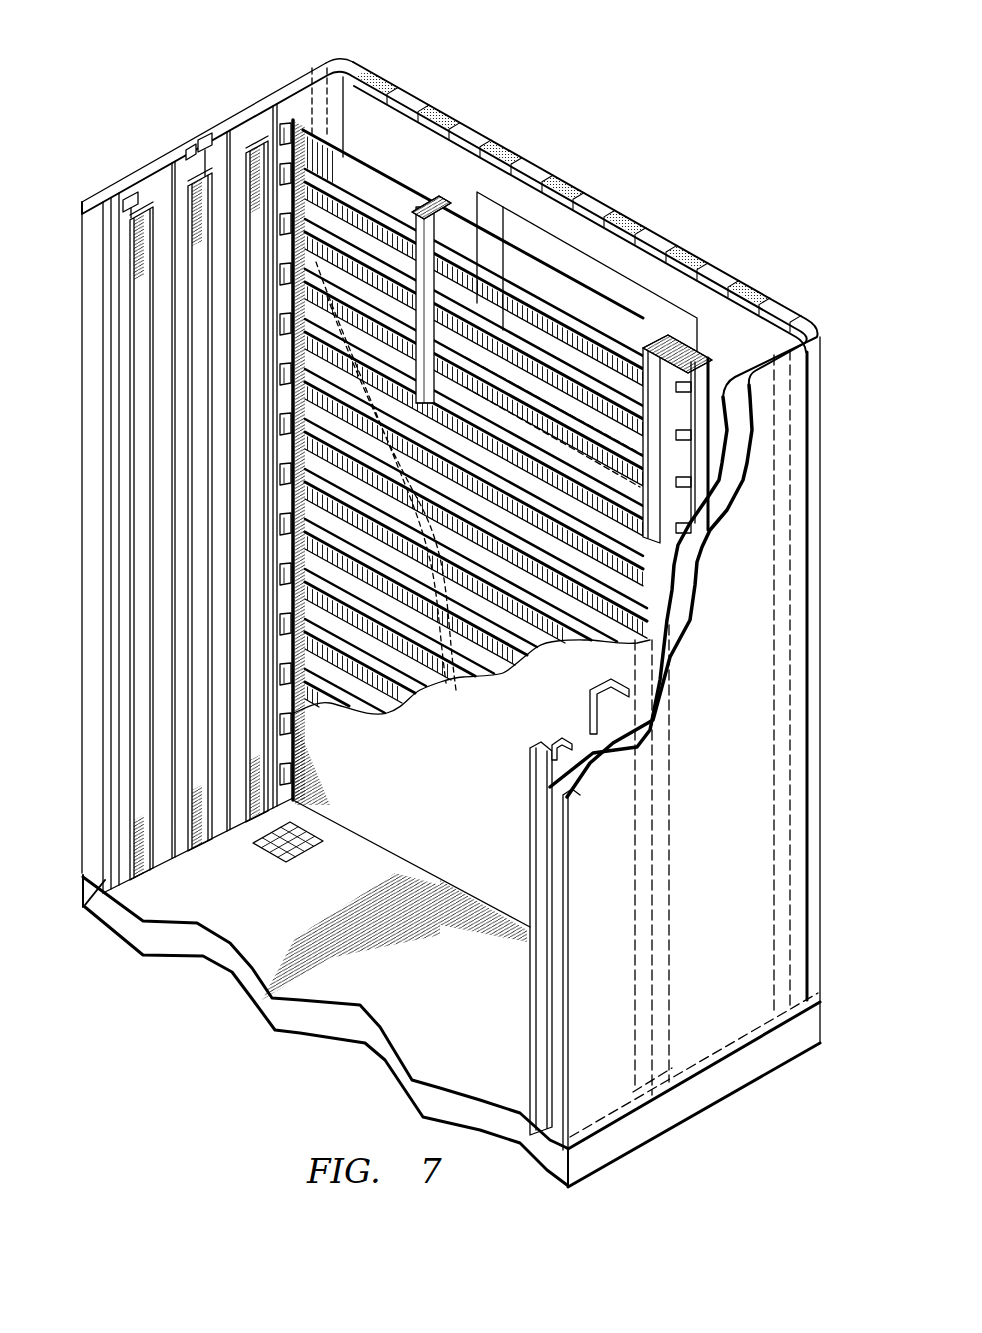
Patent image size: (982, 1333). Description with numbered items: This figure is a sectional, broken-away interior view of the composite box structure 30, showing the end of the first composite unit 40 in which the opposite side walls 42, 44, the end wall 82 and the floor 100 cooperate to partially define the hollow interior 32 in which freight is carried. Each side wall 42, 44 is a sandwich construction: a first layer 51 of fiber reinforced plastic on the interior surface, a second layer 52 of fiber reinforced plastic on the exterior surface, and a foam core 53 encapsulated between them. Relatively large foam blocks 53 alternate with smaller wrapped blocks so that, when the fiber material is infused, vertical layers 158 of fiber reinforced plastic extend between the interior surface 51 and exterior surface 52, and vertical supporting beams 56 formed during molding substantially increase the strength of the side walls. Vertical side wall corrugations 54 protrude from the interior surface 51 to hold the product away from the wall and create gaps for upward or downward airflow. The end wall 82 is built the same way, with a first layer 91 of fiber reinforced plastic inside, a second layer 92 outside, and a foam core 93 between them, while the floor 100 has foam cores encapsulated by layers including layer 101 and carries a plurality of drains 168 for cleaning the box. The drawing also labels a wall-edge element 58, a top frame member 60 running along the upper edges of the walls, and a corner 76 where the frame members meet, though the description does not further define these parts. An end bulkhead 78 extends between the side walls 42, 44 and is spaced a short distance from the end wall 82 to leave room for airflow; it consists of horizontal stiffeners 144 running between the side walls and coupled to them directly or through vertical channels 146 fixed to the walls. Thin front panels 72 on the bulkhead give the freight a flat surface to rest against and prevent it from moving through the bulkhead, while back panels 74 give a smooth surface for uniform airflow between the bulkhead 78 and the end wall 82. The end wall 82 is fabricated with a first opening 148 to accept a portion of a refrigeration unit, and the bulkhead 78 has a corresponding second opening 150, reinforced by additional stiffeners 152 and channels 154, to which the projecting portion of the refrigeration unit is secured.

The composite box structure 30 is at (728, 128).
The hollow interior 32 is at (262, 1047).
The first composite unit 40 is at (824, 553).
The side wall 42 is at (608, 1088).
The side wall 44 is at (204, 57).
The first layer of fiber reinforced plastic 51 is at (160, 385).
The second layer of fiber reinforced plastic 52 is at (709, 900).
The foam core 53 is at (273, 103).
The side wall corrugations 54 is at (546, 748).
The vertical supporting beams 56 is at (669, 807).
The corner post 58 is at (818, 462).
The top frame tube 60 is at (346, 57).
The front panel 72 is at (449, 825).
The back panel 74 is at (397, 703).
The frame corner 76 is at (312, 72).
The end bulkhead 78 is at (363, 822).
The end wall 82 is at (617, 138).
The first layer of fiber reinforced plastic 91 is at (656, 275).
The second layer of fiber reinforced plastic 92 is at (455, 106).
The foam core 93 is at (390, 66).
The floor 100 is at (143, 930).
The layer of fiber reinforced plastic 101 is at (420, 1057).
The horizontal stiffeners 144 is at (470, 668).
The vertical channels 146 is at (320, 700).
The first opening 148 is at (586, 274).
The second opening 150 is at (465, 208).
The additional stiffeners 152 is at (533, 268).
The channels 154 is at (653, 462).
The vertical layers of fiber reinforced plastic 158 is at (203, 149).
The drains 168 is at (262, 846).